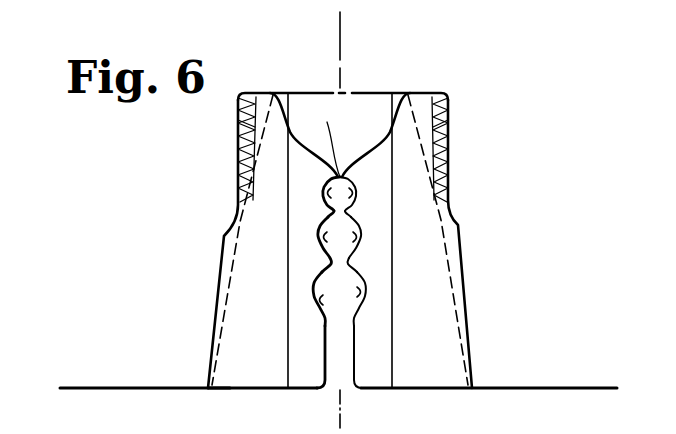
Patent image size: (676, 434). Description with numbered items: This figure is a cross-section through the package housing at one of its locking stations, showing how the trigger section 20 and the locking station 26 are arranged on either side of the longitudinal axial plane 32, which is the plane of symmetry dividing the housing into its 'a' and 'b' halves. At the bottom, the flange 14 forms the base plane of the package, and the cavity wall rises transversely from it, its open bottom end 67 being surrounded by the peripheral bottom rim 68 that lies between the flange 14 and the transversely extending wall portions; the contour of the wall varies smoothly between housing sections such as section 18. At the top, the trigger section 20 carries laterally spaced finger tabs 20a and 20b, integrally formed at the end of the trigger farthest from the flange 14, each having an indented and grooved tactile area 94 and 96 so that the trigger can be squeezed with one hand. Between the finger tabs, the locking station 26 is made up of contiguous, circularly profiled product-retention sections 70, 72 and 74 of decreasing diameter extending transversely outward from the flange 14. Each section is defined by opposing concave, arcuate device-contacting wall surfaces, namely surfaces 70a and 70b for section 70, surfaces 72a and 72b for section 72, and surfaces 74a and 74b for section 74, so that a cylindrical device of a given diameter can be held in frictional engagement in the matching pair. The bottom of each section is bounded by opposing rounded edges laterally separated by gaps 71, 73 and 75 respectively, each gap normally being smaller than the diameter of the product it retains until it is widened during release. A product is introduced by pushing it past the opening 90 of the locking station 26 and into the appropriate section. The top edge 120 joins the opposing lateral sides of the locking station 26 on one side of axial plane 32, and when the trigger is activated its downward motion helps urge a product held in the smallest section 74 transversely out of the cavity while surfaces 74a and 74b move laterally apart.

The flange 14 is at (585, 388).
The section of housing 18 is at (375, 92).
The trigger section 20 is at (470, 343).
The finger tab 20a is at (257, 92).
The finger tab 20b is at (432, 92).
The locking station 26 is at (322, 261).
The longitudinal axial plane 32 is at (342, 52).
The open bottom end 67 is at (354, 392).
The peripheral bottom rim 68 is at (222, 390).
The product-retention section 70 is at (366, 312).
The device-contacting wall surface 70a is at (320, 298).
The device-contacting wall surface 70b is at (362, 292).
The gap 71 is at (342, 326).
The product-retention section 72 is at (357, 251).
The device-contacting wall surface 72a is at (324, 236).
The device-contacting wall surface 72b is at (362, 229).
The gap 73 is at (342, 263).
The product-retention section 74 is at (359, 204).
The device-contacting wall surface 74a is at (328, 192).
The device-contacting wall surface 74b is at (353, 192).
The gap 75 is at (333, 210).
The opening 90 is at (325, 390).
The tactile area 94 is at (238, 134).
The tactile area 96 is at (437, 120).
The top edge 120 is at (325, 139).